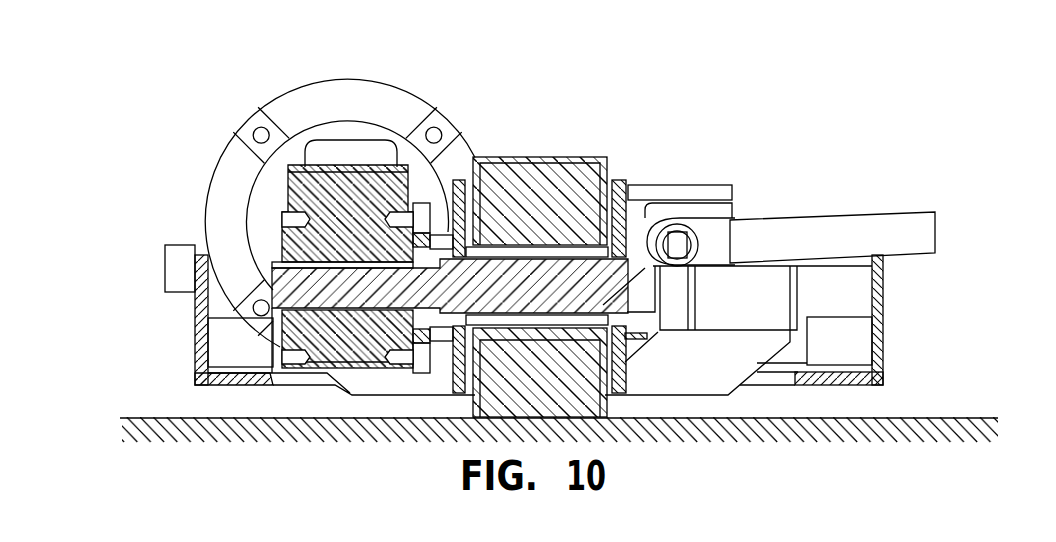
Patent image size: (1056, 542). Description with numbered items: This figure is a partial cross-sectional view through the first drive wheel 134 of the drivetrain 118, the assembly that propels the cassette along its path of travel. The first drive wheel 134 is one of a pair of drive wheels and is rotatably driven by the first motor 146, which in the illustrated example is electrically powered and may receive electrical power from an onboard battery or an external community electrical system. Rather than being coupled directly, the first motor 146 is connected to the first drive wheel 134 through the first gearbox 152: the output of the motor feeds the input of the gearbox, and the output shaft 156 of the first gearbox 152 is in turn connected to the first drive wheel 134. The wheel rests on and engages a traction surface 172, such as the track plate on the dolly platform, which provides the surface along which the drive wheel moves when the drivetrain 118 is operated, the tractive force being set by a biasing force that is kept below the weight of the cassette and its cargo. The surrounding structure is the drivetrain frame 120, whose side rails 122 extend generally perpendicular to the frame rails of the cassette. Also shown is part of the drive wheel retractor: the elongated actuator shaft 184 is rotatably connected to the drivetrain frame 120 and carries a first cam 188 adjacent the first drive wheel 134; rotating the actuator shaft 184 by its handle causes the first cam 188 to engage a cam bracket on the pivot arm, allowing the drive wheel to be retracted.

The drivetrain 118 is at (652, 143).
The drivetrain frame 120 is at (883, 282).
The side rail 122 is at (883, 322).
The first drive wheel 134 is at (537, 157).
The first motor 146 is at (348, 77).
The first gearbox 152 is at (290, 183).
The output shaft 156 is at (278, 292).
The traction surface 172 is at (961, 416).
The actuator shaft 184 is at (730, 218).
The first cam 188 is at (698, 245).